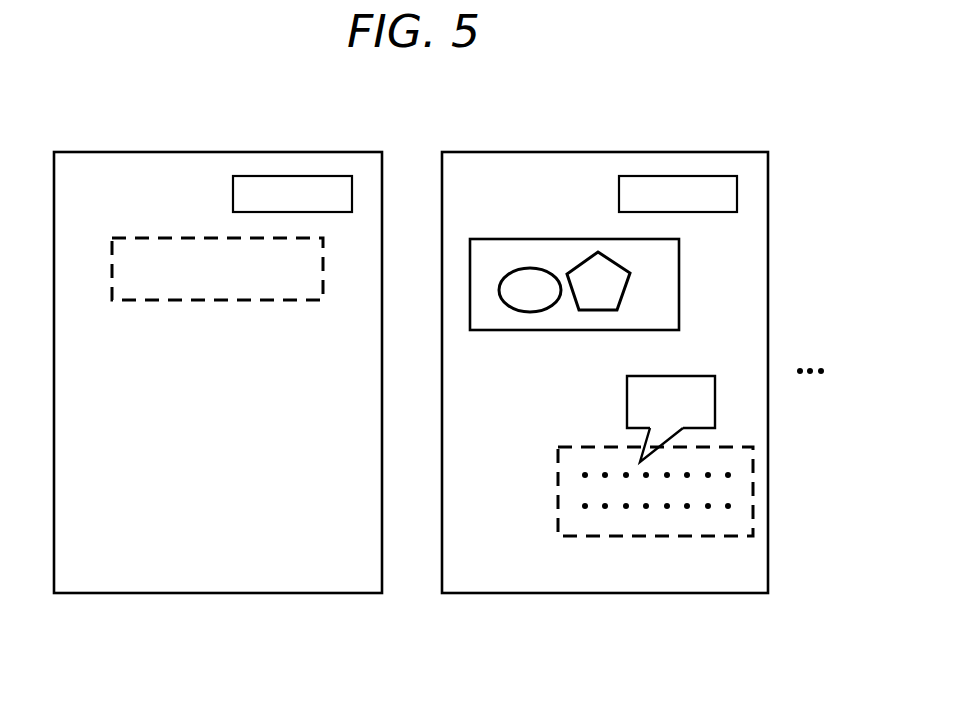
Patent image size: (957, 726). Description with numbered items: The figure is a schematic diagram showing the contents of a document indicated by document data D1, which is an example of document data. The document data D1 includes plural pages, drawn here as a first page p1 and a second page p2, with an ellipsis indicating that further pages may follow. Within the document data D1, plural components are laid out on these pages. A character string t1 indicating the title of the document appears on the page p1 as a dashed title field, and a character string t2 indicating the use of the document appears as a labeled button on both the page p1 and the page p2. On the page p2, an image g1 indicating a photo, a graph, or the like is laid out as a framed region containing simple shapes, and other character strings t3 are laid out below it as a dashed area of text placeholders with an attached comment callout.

The document data D1 is at (456, 351).
The page p1 is at (221, 152).
The page p2 is at (582, 152).
The character string t1 is at (150, 238).
The character string t2 is at (303, 175).
The other character strings t3 is at (753, 463).
The image g1 is at (515, 239).